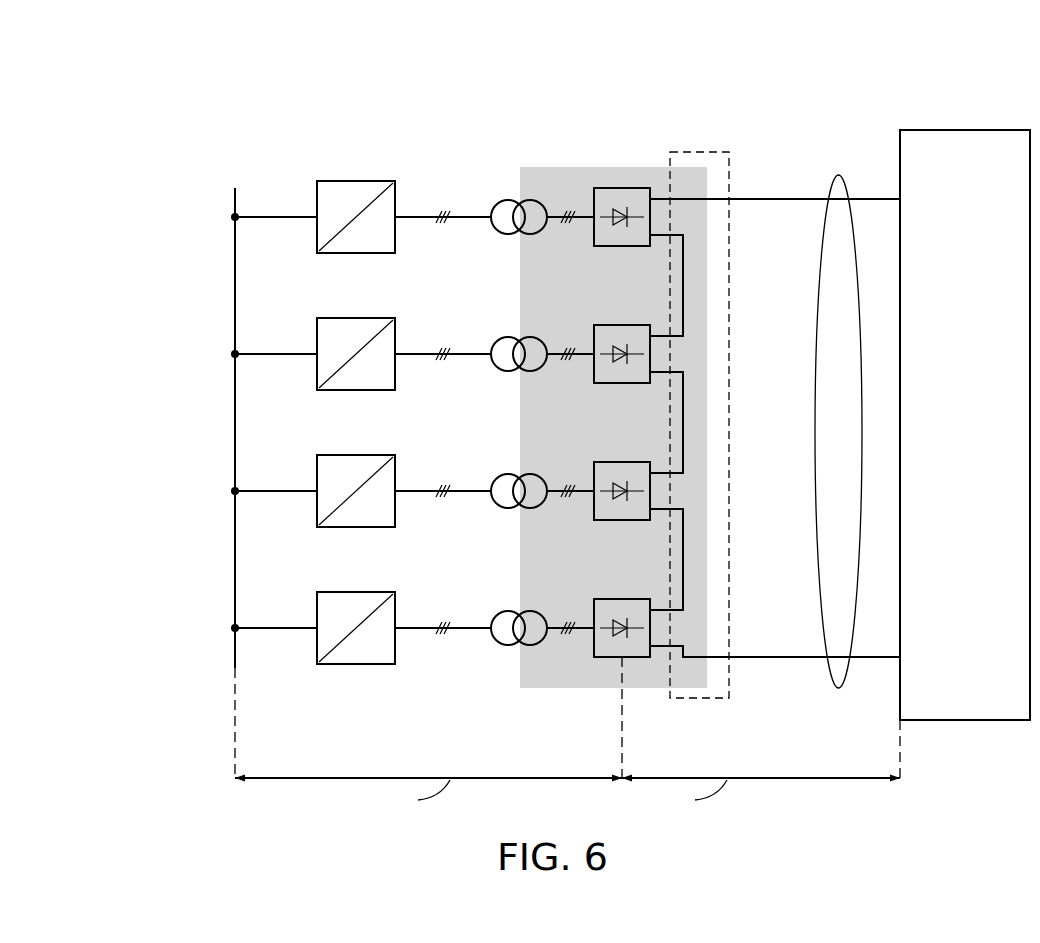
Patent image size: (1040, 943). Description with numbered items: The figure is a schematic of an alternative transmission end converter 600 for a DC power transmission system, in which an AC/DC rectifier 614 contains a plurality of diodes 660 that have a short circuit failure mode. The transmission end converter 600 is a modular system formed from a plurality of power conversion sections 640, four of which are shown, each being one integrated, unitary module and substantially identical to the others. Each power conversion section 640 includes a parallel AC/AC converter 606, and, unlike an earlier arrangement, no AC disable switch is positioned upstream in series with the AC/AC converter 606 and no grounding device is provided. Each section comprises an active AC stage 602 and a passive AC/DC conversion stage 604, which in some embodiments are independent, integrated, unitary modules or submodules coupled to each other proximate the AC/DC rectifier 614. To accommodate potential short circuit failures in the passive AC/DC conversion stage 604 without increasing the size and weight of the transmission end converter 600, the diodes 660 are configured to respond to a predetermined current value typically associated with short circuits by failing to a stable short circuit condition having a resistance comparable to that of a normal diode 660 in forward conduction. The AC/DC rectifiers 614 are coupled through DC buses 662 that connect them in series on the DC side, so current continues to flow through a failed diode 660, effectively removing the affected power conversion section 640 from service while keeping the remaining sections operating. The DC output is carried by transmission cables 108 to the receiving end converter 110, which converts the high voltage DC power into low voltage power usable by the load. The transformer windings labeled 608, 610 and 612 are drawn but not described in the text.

The transmission end converter 600 is at (815, 70).
The active AC stage 602 is at (400, 712).
The passive AC/DC conversion stage 604 is at (717, 718).
The AC/AC converter 606 is at (355, 182).
The transformer 608 is at (497, 645).
The primary winding 610 is at (512, 643).
The secondary winding 612 is at (533, 612).
The AC/DC rectifier 614 is at (610, 657).
The power conversion section 640 is at (218, 217).
The diode 660 is at (620, 189).
The DC bus 662 is at (715, 162).
The transmission cables 108 is at (838, 688).
The receiving end converter 110 is at (966, 130).